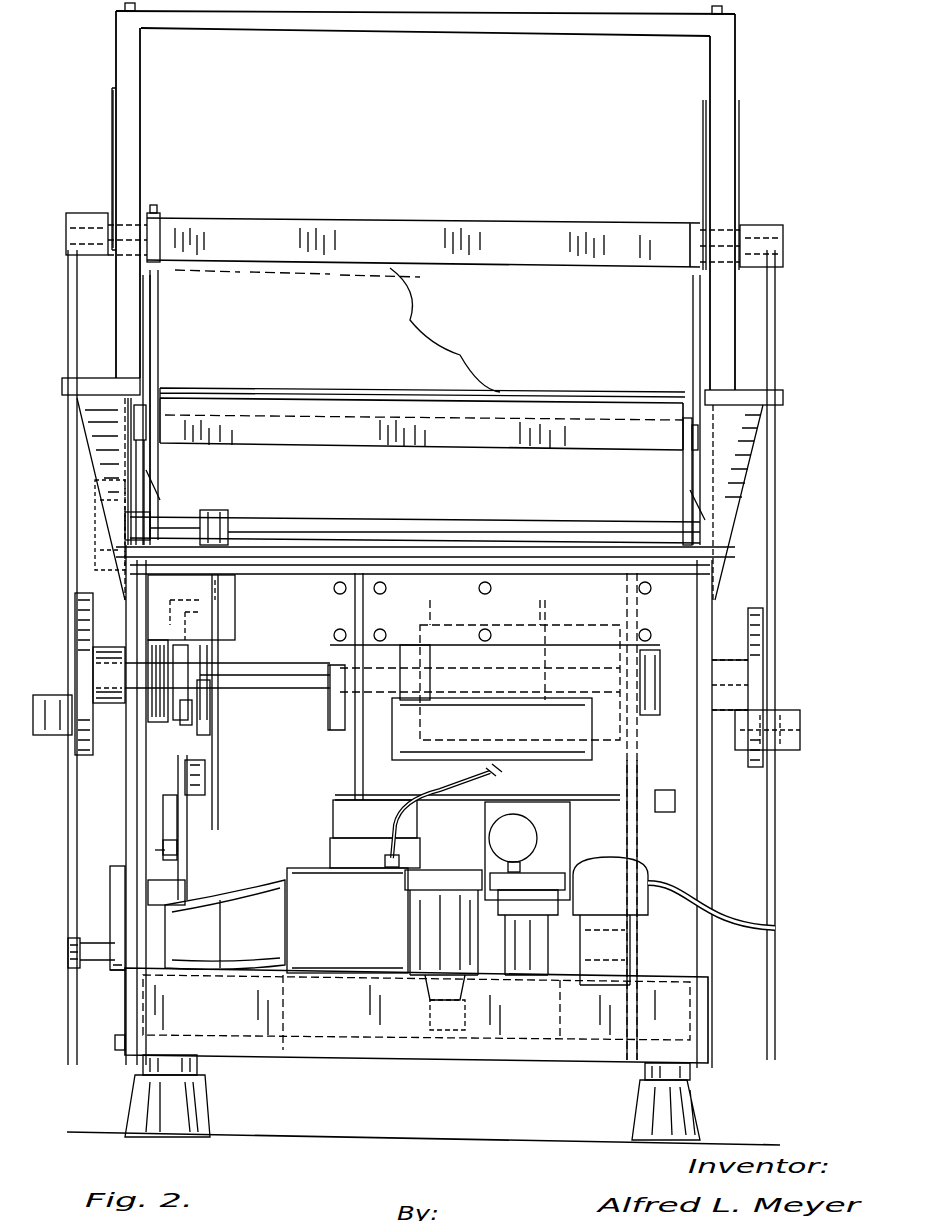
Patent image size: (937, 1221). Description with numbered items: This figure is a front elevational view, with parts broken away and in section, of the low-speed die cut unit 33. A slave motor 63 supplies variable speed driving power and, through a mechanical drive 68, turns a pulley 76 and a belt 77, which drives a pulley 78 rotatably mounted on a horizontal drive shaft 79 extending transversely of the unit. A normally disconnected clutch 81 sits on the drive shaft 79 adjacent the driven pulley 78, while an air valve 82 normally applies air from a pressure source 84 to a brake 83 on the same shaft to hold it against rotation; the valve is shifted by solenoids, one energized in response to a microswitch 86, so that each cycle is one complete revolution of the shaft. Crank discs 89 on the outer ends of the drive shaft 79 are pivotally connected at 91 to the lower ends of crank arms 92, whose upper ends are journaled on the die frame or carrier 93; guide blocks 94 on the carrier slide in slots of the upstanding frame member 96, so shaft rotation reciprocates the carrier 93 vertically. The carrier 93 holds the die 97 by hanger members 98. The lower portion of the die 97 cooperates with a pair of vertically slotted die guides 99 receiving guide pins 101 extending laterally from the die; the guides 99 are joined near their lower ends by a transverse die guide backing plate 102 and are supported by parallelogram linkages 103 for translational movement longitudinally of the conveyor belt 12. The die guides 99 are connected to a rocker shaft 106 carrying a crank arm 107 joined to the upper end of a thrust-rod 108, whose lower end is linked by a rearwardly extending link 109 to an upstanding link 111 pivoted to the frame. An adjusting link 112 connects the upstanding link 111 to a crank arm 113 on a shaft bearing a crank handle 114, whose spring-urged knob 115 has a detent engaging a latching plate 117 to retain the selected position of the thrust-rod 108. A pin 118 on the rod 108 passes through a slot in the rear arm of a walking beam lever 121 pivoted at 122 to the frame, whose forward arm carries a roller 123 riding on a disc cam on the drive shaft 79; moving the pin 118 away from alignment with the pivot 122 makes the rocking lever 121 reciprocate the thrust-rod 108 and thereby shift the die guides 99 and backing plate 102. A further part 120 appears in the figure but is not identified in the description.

The conveyor belt 12 is at (553, 398).
The low-speed die cut unit 33 is at (110, 92).
The slave motor 63 is at (247, 958).
The mechanical drive 68 is at (456, 1030).
The pulley 76 is at (620, 966).
The belt 77 is at (635, 820).
The pulley 78 is at (652, 716).
The drive shaft 79 is at (300, 690).
The clutch 81 is at (600, 600).
The air valve 82 is at (565, 753).
The brake 83 is at (440, 656).
The source of air under pressure 84 is at (768, 922).
The microswitch 86 is at (328, 720).
The crank discs 89 is at (75, 747).
The pivotal connection 91 is at (45, 700).
The crank arms 92 is at (68, 547).
The die frame or carrier 93 is at (489, 224).
The guide blocks 94 is at (112, 218).
The upstanding frame member 96 is at (135, 110).
The die 97 is at (320, 278).
The hanger members 98 is at (160, 232).
The die guides 99 is at (152, 297).
The guide pins 101 is at (155, 373).
The die guide backing plate 102 is at (413, 422).
The parallelogram linkages 103 is at (152, 462).
The rocker shaft 106 is at (328, 520).
The crank arm 107 is at (218, 512).
The thrust-rod 108 is at (220, 756).
The link 109 is at (206, 778).
The upstanding link 111 is at (188, 868).
The adjusting link 112 is at (182, 828).
The crank arm 113 is at (163, 858).
The crank handle 114 is at (113, 880).
The knob 115 is at (72, 935).
The latching plate 117 is at (118, 972).
The pin 118 is at (240, 688).
The clutch collar 120 is at (192, 722).
The walking beam lever 121 is at (207, 655).
The pivot 122 is at (210, 705).
The roller 123 is at (185, 620).